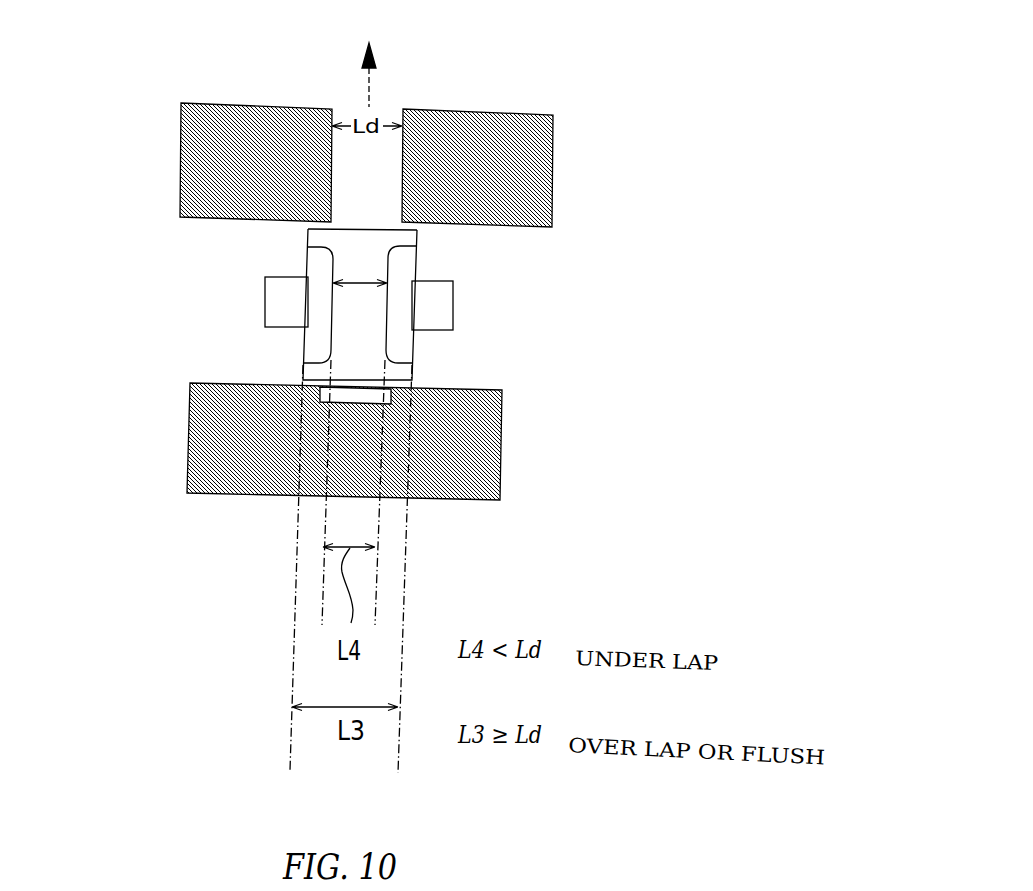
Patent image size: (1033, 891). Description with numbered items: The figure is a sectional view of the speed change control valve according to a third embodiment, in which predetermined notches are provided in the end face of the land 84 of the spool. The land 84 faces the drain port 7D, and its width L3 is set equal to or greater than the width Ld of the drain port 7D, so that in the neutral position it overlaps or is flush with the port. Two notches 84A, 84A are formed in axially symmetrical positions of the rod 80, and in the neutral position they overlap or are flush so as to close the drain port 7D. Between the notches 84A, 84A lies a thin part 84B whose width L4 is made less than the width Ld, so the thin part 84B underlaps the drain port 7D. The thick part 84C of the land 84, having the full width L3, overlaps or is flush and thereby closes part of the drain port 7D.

The drain port 7D is at (372, 62).
The rod 80 is at (442, 290).
The land 84 is at (380, 278).
The notch 84A is at (563, 323).
The thin part 84B is at (363, 284).
The thick part 84C is at (362, 230).